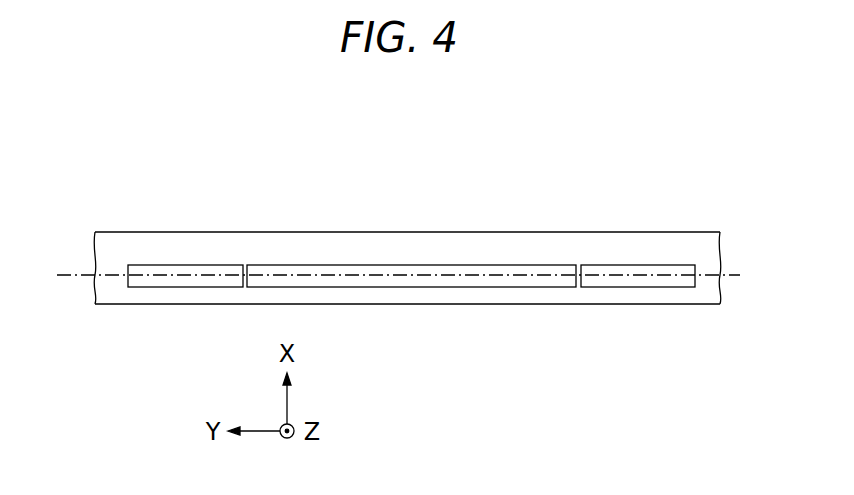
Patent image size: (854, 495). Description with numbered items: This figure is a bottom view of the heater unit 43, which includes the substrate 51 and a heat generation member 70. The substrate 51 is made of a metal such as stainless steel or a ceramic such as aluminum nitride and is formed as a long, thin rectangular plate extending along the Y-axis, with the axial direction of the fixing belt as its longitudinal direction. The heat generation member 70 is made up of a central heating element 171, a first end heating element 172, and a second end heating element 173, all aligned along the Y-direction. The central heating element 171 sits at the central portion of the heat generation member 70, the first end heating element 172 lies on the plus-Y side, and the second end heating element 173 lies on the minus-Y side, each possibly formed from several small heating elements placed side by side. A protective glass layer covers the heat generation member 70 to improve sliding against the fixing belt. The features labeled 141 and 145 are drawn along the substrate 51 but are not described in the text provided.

The heater unit 43 is at (172, 184).
The substrate 51 is at (117, 250).
The heat generation member 70 is at (470, 254).
The optical axis 141 is at (72, 275).
The side wall 145 is at (118, 277).
The central heating element 171 is at (382, 270).
The first end heating element 172 is at (210, 268).
The second end heating element 173 is at (599, 268).